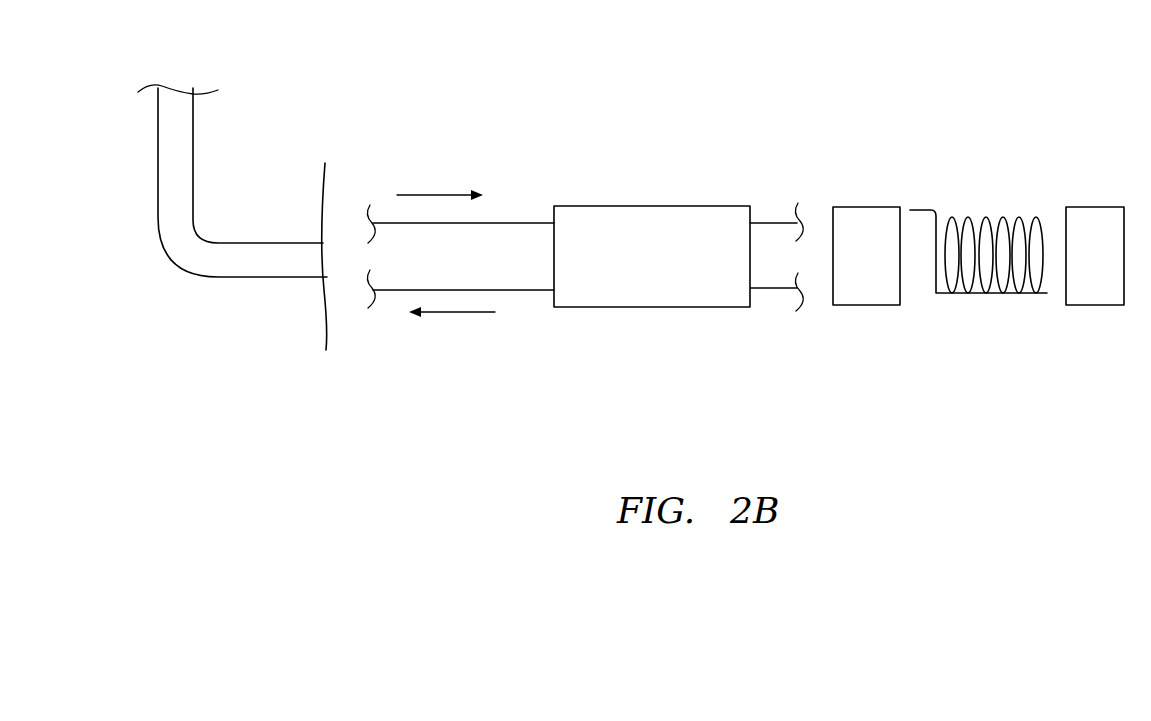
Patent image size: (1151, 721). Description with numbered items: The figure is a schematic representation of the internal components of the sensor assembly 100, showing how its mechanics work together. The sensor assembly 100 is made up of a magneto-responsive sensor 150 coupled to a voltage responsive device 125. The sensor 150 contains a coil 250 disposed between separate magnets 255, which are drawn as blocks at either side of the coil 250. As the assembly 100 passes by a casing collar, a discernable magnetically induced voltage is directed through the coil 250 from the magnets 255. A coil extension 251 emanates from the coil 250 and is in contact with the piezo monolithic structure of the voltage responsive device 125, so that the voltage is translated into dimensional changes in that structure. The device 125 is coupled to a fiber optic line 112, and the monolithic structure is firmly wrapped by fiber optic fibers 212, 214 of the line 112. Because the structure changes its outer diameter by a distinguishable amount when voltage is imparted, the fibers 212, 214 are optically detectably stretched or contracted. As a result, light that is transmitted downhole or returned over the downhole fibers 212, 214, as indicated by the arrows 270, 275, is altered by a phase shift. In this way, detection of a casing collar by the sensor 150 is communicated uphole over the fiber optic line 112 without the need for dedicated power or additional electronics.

The sensor assembly 100 is at (831, 64).
The fiber optic line 112 is at (223, 267).
The voltage responsive device 125 is at (654, 333).
The magneto-responsive sensor 150 is at (1006, 362).
The fiber optic fiber 212 is at (532, 223).
The fiber optic fiber 214 is at (507, 290).
The coil 250 is at (987, 215).
The coil extension 251 is at (762, 293).
The magnet 255 is at (852, 222).
The arrow 270 is at (413, 195).
The arrow 275 is at (437, 312).